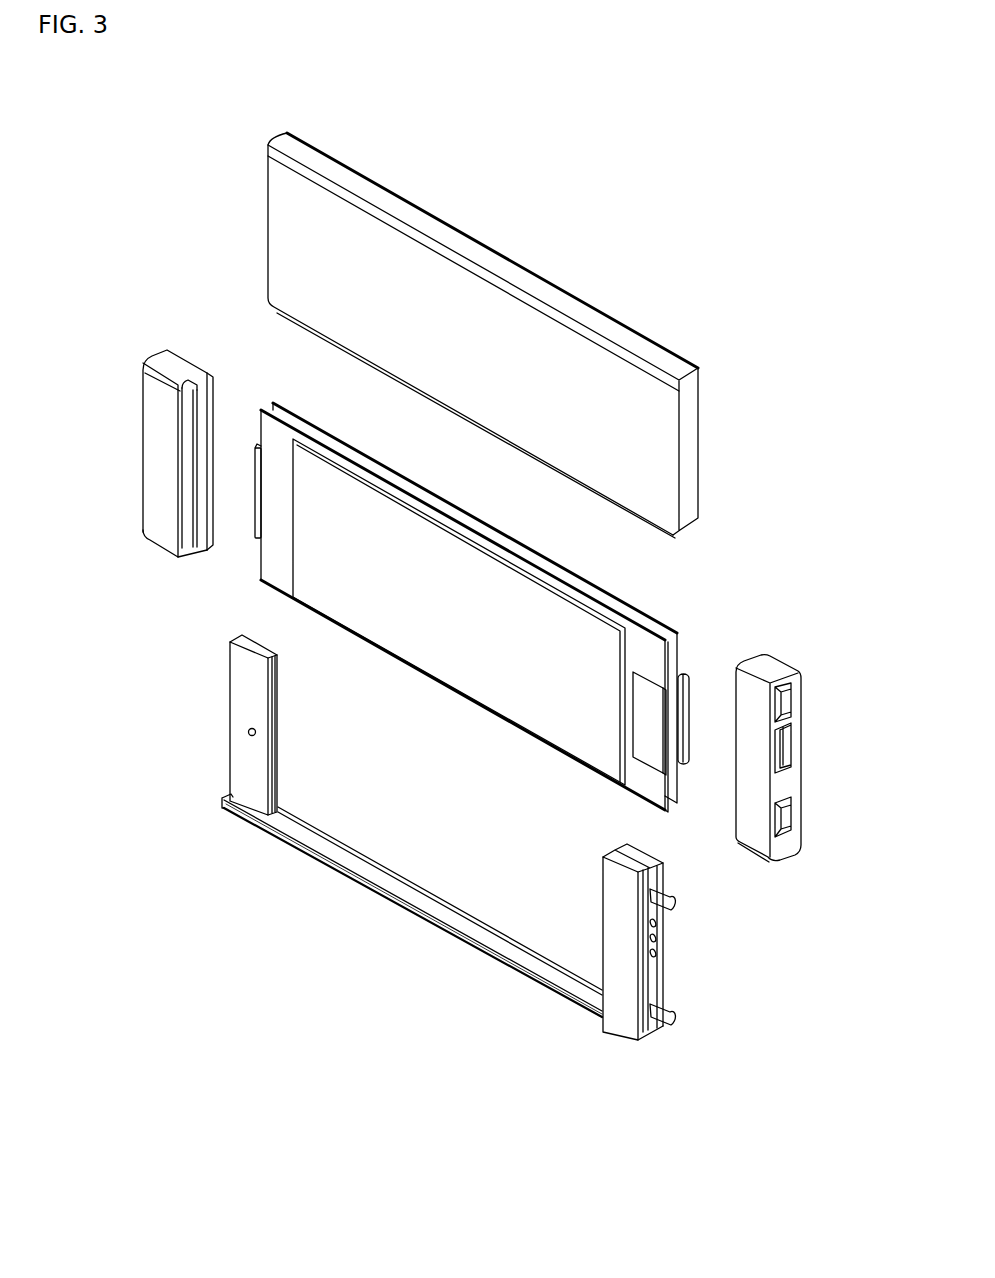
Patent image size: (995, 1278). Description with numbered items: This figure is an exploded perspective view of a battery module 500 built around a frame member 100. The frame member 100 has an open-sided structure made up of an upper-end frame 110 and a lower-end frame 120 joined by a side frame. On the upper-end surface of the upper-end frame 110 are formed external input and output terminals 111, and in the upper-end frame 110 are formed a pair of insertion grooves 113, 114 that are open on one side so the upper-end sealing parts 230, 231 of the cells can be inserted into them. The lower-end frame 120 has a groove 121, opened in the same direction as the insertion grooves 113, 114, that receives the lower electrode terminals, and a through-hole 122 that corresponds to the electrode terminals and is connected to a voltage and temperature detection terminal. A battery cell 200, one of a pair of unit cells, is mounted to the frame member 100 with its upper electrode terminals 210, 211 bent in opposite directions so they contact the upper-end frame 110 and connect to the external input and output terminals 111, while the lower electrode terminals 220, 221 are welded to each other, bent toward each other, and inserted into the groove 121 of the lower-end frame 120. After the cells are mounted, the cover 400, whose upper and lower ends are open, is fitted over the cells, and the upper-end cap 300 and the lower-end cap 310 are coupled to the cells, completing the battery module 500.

The battery module 500 is at (112, 103).
The cover 400 is at (480, 238).
The lower-end cap 310 is at (143, 429).
The upper-end cap 300 is at (775, 658).
The upper-end sealing part 231 is at (665, 623).
The upper-end sealing part 230 is at (643, 786).
The battery cell 200 is at (453, 673).
The upper electrode terminal 210 is at (643, 715).
The upper electrode terminal 211 is at (687, 676).
The lower electrode terminal 220 is at (255, 535).
The lower electrode terminal 221 is at (257, 448).
The lower-end frame 120 is at (243, 682).
The groove 121 is at (275, 718).
The through-hole 122 is at (248, 735).
The frame member 100 is at (324, 931).
The upper-end frame 110 is at (622, 1002).
The external input and output terminals 111 is at (677, 907).
The insertion groove 113 is at (660, 1028).
The insertion groove 114 is at (662, 975).